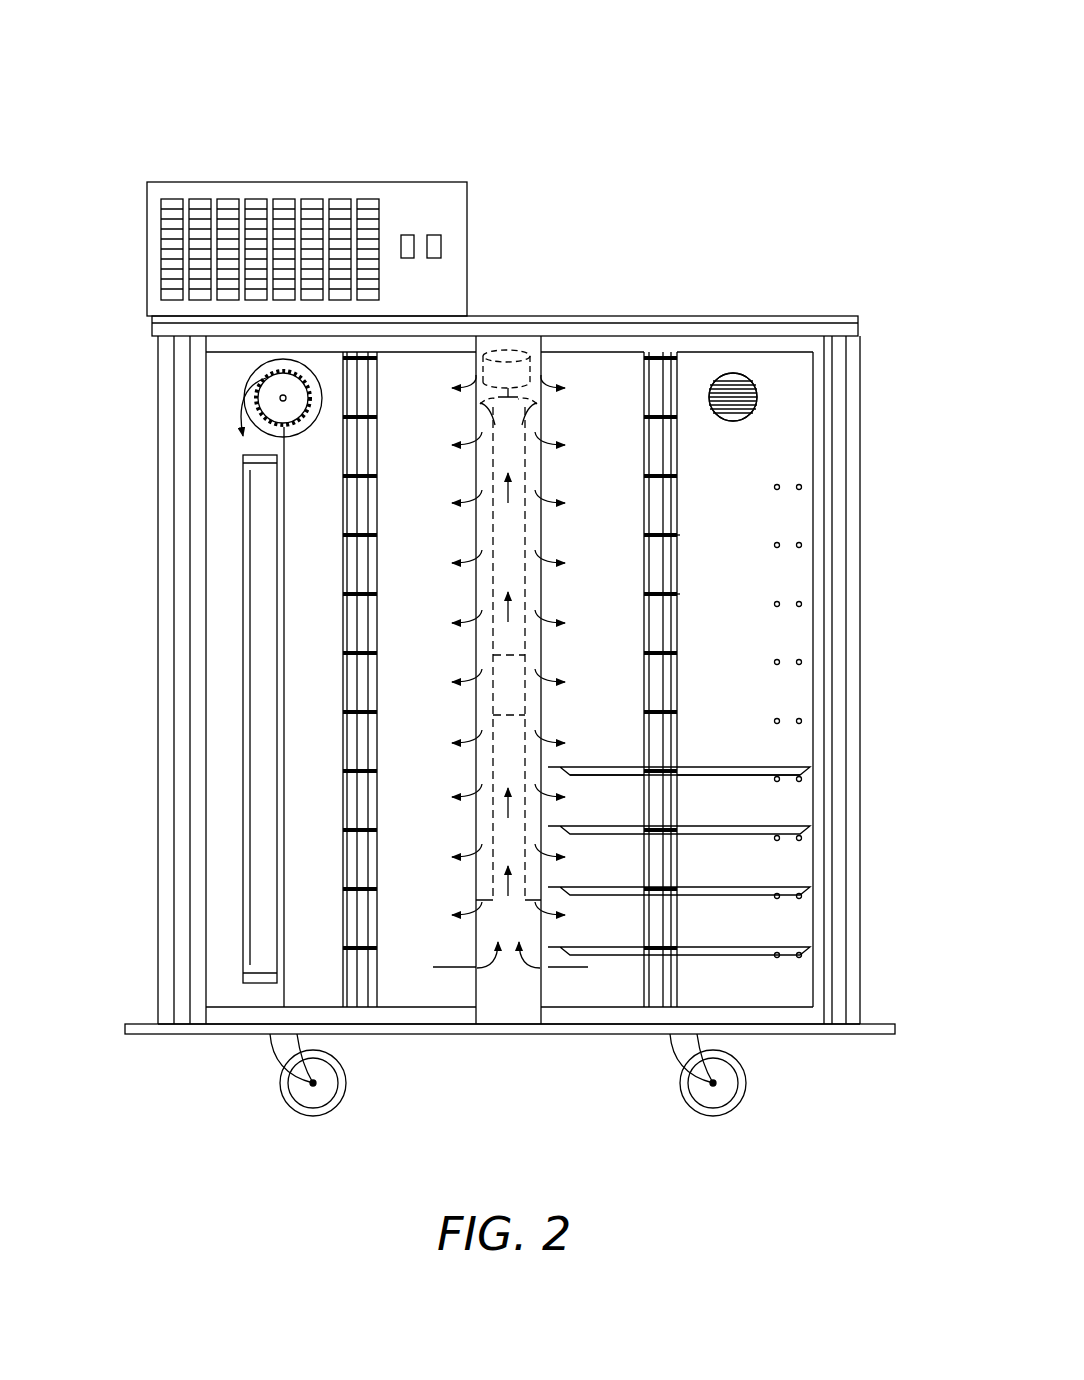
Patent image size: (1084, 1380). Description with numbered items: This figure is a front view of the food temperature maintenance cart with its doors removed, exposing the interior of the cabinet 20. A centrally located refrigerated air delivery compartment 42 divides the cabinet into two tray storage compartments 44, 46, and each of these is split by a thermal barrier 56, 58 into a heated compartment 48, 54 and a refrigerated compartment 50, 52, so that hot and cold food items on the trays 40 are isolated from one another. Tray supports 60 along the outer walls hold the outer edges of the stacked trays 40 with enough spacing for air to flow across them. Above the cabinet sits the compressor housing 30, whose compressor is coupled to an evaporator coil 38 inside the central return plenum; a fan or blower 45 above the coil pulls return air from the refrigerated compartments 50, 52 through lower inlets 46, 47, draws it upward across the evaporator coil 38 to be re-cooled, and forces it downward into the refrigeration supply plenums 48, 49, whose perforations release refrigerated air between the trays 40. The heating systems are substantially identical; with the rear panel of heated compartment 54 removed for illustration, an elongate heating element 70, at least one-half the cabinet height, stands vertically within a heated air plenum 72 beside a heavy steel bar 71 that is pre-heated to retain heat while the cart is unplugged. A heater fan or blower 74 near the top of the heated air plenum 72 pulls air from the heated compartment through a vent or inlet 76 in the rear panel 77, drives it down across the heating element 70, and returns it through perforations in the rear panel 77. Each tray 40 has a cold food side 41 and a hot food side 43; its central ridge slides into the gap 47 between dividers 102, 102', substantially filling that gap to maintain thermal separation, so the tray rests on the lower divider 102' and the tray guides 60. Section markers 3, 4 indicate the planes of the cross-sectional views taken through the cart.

The section line 3- 3 is at (560, 315).
The section line 4- 4 is at (705, 315).
The cabinet 20 is at (860, 343).
The compressor housing 30 is at (148, 212).
The evaporator coil 38 is at (508, 683).
The tray 40 is at (580, 767).
The cold food side 41 is at (592, 778).
The refrigerated air delivery compartment 42 is at (538, 148).
The hot food side 43 is at (705, 778).
The tray storage compartment 44 is at (798, 53).
The fan or blower 45 is at (511, 352).
The tray storage compartment 46 is at (457, 53).
The gap 47 is at (468, 990).
The heated compartment 48 is at (798, 148).
The refrigeration supply plenum 49 is at (485, 547).
The refrigerated compartment 50 is at (632, 148).
The refrigerated compartment 52 is at (462, 148).
The heated compartment 54 is at (370, 148).
The thermal barrier 56 is at (640, 452).
The thermal barrier 58 is at (377, 446).
The tray supports 60 is at (555, 650).
The heating element 70 is at (243, 460).
The heavy steel bar 71 is at (243, 518).
The heated air plenum 72 is at (245, 442).
The heater fan or blower 74 is at (262, 390).
The vent or inlet 76 is at (758, 397).
The rear panel 77 is at (710, 385).
The divider 102 is at (728, 499).
The lower divider 102' is at (732, 604).